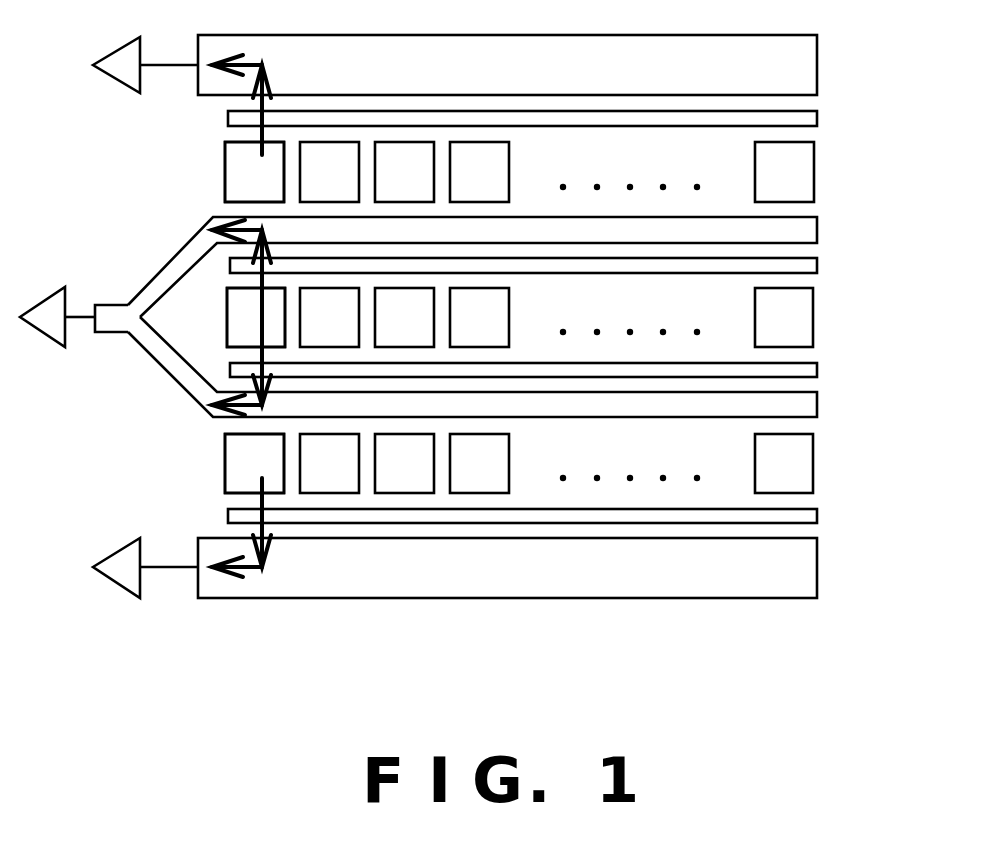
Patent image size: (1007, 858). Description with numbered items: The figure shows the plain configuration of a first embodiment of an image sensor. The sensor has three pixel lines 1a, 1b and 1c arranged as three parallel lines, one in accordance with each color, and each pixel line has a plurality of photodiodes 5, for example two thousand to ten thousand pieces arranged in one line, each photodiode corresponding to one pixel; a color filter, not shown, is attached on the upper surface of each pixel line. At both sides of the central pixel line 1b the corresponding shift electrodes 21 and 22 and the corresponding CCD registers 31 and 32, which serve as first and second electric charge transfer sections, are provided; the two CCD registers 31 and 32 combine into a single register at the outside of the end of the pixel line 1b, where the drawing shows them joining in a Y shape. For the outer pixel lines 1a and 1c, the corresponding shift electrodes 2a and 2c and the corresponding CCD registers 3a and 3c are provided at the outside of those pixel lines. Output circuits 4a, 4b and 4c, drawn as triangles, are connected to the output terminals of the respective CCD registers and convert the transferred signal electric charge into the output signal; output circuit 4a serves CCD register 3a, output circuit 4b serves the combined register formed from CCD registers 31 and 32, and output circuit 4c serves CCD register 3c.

The pixel line 1a is at (820, 142).
The central pixel line 1b is at (820, 288).
The pixel line 1c is at (820, 434).
The shift electrode 2a is at (800, 117).
The shift electrode 21 is at (800, 265).
The shift electrode 22 is at (800, 370).
The shift electrode 2c is at (800, 517).
The CCD register 3a is at (800, 68).
The CCD register 31 is at (800, 225).
The CCD register 32 is at (800, 410).
The CCD register 3c is at (800, 570).
The output circuit 4a is at (113, 72).
The output circuit 4b is at (43, 330).
The output circuit 4c is at (113, 573).
The photodiode 5 is at (232, 170).